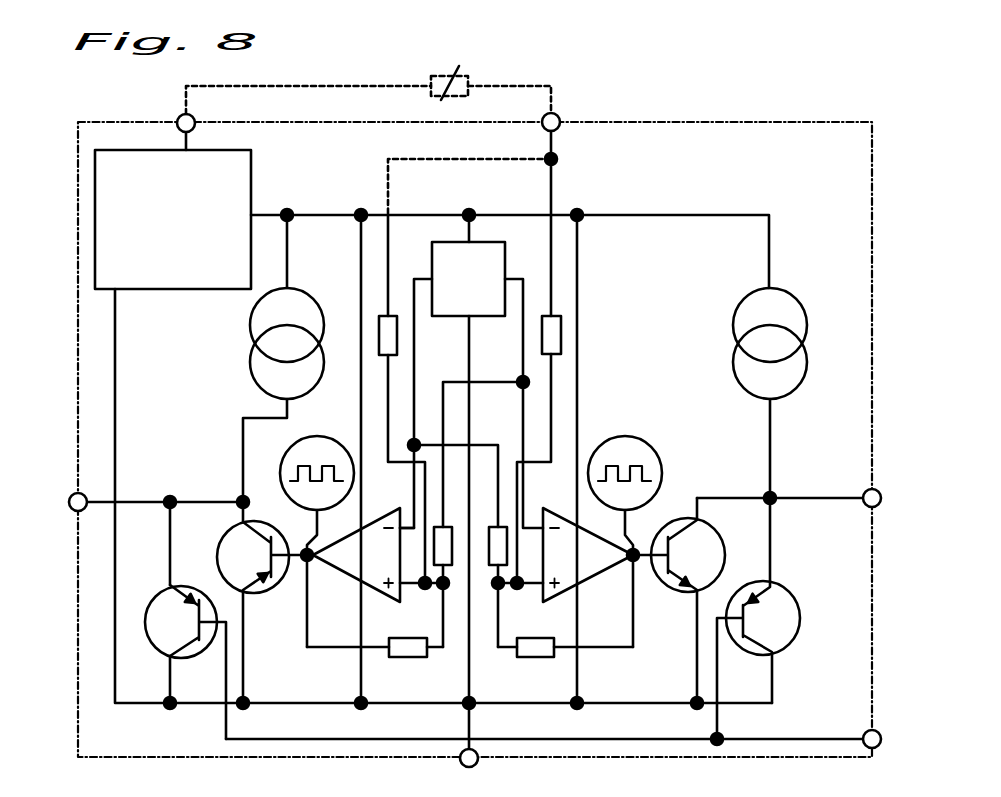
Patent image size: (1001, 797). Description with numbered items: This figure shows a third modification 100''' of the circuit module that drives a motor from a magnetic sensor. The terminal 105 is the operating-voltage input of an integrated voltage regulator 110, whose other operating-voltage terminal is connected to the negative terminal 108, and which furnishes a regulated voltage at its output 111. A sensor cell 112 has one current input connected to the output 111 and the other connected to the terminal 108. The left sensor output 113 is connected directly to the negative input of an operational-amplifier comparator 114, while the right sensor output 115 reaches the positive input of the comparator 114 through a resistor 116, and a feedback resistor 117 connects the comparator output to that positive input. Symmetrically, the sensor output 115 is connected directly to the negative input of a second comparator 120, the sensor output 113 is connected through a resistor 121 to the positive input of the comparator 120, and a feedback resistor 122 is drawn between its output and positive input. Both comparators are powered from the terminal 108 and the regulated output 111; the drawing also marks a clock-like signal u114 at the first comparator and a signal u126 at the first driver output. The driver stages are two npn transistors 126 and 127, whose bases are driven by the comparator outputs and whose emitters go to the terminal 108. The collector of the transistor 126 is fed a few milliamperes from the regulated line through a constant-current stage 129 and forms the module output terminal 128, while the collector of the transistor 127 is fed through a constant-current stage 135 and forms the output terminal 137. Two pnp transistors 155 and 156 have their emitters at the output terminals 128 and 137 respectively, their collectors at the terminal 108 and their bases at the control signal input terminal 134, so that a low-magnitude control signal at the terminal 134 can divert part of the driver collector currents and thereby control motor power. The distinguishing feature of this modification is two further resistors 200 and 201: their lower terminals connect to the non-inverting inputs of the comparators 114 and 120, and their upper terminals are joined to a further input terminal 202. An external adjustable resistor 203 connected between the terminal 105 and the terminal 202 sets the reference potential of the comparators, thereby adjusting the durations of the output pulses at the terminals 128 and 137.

The third modification of circuit module 100''' is at (475, 423).
The terminal 105 is at (196, 126).
The terminal 108 is at (480, 766).
The voltage regulator 110 is at (194, 235).
The output 111 is at (404, 213).
The Hall cell 112 is at (507, 272).
The left Hall output 113 is at (414, 392).
The operational-amplifier comparator 114 is at (383, 569).
The right Hall output 115 is at (519, 380).
The resistor 116 is at (434, 540).
The feedback resistor 117 is at (412, 657).
The operational-amplifier comparator 120 is at (597, 569).
The resistor 121 is at (510, 536).
The fourth resistor 122 is at (530, 657).
The driver transistor 126 is at (263, 593).
The driver transistor 127 is at (682, 592).
The module output terminal 128 is at (78, 493).
The constant-current stage 129 is at (252, 372).
The terminal 134 is at (866, 731).
The constant-current stage 135 is at (733, 322).
The output terminal 137 is at (863, 492).
The pnp transistor 155 is at (150, 604).
The pnp transistor 156 is at (801, 615).
The resistor 200 is at (379, 332).
The resistor 201 is at (562, 338).
The input terminal 202 is at (558, 115).
The adjustable resistor 203 is at (440, 76).
The clock voltage source u114 is at (300, 442).
The output voltage node u126 is at (172, 498).